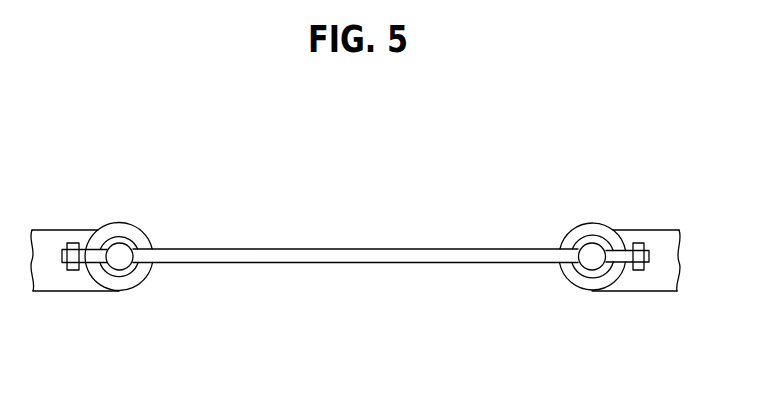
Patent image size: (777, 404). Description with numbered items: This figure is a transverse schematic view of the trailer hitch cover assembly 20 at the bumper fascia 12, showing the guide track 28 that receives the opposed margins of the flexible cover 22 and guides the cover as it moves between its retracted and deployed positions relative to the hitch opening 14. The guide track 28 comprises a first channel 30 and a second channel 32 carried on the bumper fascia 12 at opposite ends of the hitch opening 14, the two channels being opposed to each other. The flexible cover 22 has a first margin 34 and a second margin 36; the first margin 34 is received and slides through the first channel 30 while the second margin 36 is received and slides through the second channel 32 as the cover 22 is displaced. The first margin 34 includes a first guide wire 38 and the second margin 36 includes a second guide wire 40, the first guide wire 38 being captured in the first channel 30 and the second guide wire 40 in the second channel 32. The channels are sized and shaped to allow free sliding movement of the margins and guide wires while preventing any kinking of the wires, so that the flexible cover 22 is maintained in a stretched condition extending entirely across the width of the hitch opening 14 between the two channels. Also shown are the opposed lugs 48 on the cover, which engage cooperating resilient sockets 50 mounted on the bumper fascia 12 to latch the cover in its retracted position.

The bumper fascia 12 is at (62, 231).
The hitch opening 14 is at (355, 266).
The trailer hitch cover assembly 20 is at (116, 279).
The flexible cover 22 is at (343, 258).
The guide track 28 is at (487, 224).
The first channel 30 is at (103, 271).
The second channel 32 is at (601, 247).
The first margin 34 is at (143, 259).
The second margin 36 is at (568, 257).
The first guide wire 38 is at (121, 250).
The second guide wire 40 is at (593, 263).
The lugs 48 is at (650, 256).
The resilient sockets 50 is at (642, 246).